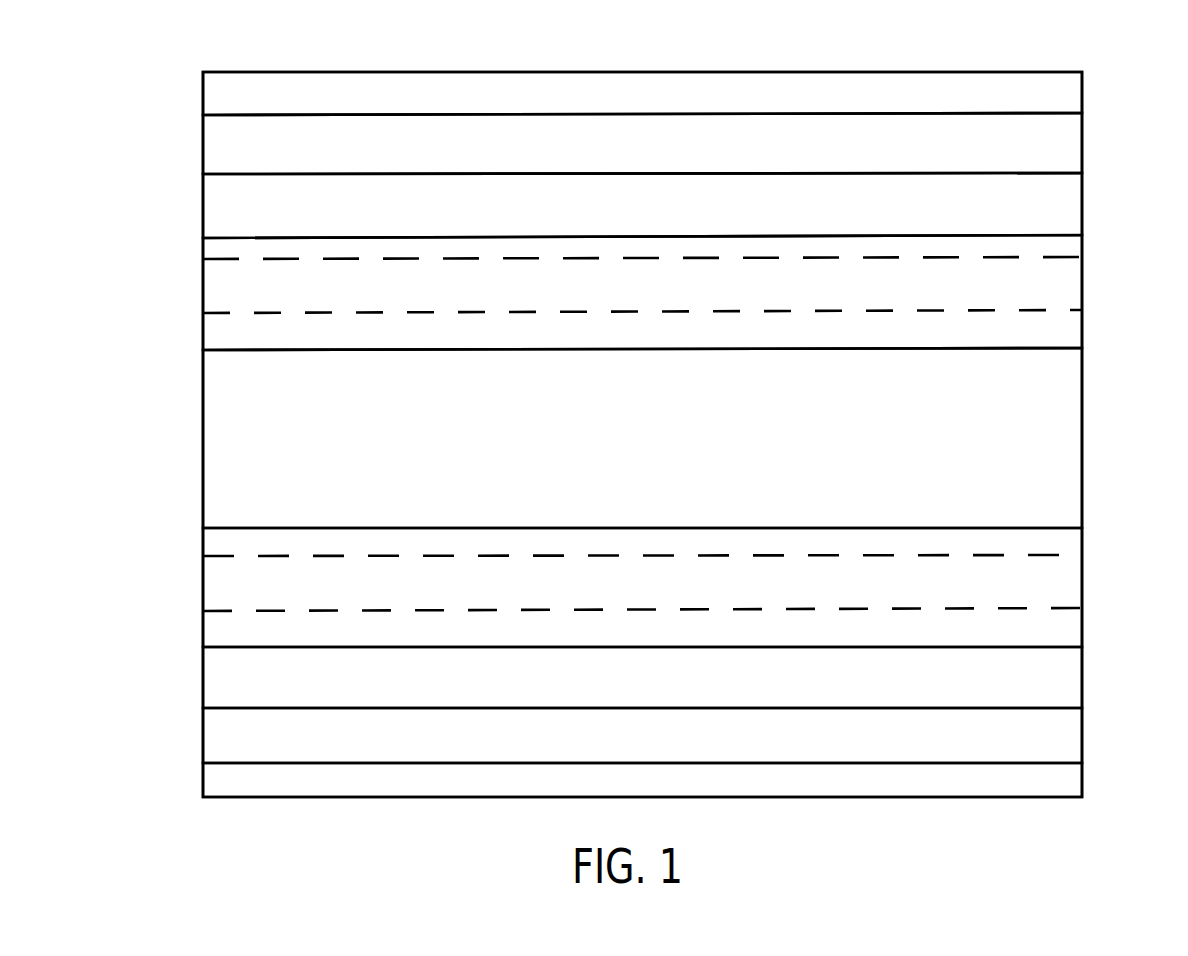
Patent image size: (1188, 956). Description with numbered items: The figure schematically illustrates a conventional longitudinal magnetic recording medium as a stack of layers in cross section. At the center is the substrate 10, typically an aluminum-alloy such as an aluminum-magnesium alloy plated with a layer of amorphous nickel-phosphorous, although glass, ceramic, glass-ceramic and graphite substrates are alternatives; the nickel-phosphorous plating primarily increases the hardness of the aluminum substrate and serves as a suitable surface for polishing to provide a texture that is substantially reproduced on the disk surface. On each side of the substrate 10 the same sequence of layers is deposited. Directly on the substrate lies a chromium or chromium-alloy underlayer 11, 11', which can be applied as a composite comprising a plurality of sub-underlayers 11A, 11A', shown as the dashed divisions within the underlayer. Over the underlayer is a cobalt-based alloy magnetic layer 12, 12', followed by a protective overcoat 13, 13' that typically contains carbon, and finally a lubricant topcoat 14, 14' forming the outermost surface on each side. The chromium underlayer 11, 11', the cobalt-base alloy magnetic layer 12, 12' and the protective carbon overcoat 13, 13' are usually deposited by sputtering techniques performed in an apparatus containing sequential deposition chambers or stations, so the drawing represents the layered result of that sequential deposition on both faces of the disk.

The substrate 10 is at (655, 457).
The underlayer 11 is at (676, 292).
The sub-underlayers 11A is at (594, 290).
The magnetic layer 12 is at (642, 205).
The protective overcoat 13 is at (642, 143).
The lubricant topcoat 14 is at (642, 93).
The underlayer 11' is at (682, 587).
The sub-underlayers 11A' is at (590, 582).
The magnetic layer 12' is at (642, 677).
The protective overcoat 13' is at (642, 735).
The lubricant topcoat 14' is at (642, 780).